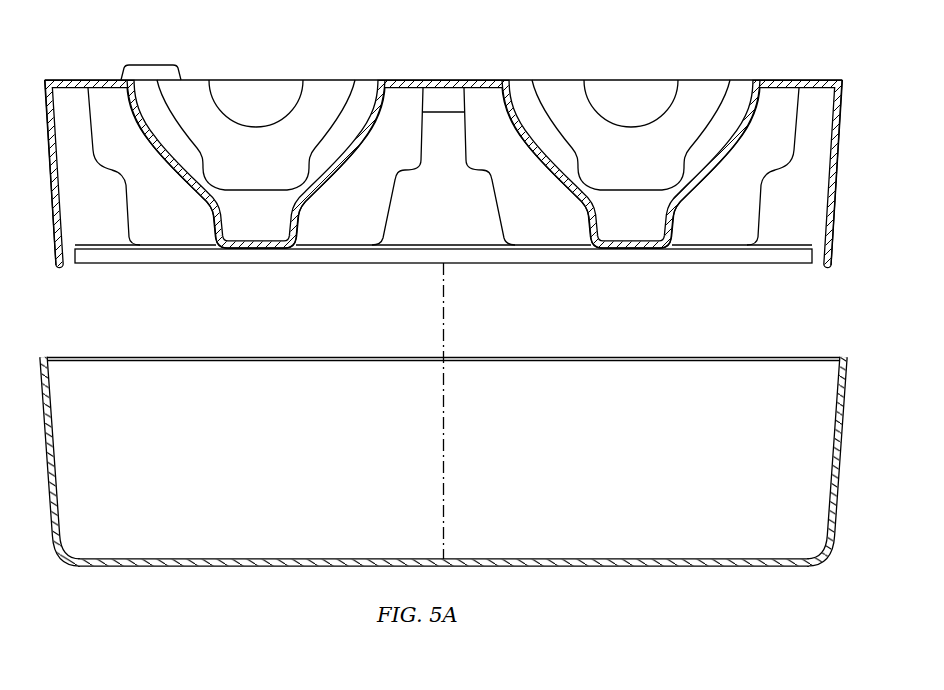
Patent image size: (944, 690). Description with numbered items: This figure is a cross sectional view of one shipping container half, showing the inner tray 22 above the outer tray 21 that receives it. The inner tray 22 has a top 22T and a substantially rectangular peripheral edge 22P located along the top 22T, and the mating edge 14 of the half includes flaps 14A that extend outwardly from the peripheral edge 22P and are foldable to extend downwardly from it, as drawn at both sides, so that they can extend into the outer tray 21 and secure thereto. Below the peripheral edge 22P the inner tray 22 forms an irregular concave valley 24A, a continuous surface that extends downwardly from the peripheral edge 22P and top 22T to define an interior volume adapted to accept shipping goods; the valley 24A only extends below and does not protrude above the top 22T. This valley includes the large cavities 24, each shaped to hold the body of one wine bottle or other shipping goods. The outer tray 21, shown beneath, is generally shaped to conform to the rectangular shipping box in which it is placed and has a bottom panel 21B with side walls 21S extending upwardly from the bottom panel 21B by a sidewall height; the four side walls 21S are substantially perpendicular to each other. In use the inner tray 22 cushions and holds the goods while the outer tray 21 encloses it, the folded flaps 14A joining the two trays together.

The mating edge 14 is at (62, 82).
The flaps 14A is at (55, 235).
The inner tray 22 is at (145, 264).
The peripheral edge 22P is at (44, 82).
The top 22T is at (102, 82).
The large cavities 24 is at (375, 110).
The concave valley 24A is at (153, 142).
The outer tray 21 is at (443, 487).
The side walls 21S is at (266, 482).
The bottom panel 21B is at (688, 568).